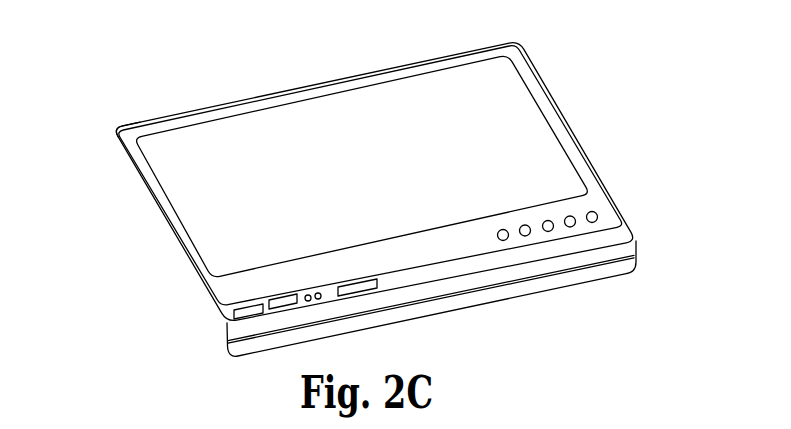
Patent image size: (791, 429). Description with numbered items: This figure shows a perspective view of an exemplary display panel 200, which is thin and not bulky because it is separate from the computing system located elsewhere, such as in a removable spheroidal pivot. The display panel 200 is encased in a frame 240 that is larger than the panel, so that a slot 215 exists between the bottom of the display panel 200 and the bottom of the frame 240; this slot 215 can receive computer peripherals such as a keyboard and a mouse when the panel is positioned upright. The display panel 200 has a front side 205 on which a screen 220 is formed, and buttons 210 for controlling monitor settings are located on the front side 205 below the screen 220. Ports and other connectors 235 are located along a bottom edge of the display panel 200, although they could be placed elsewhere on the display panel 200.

The display panel 200 is at (541, 72).
The front side 205 is at (562, 127).
The buttons 210 is at (600, 214).
The slot 215 is at (596, 257).
The screen 220 is at (200, 223).
The ports and other connectors 235 is at (243, 316).
The frame 240 is at (116, 129).